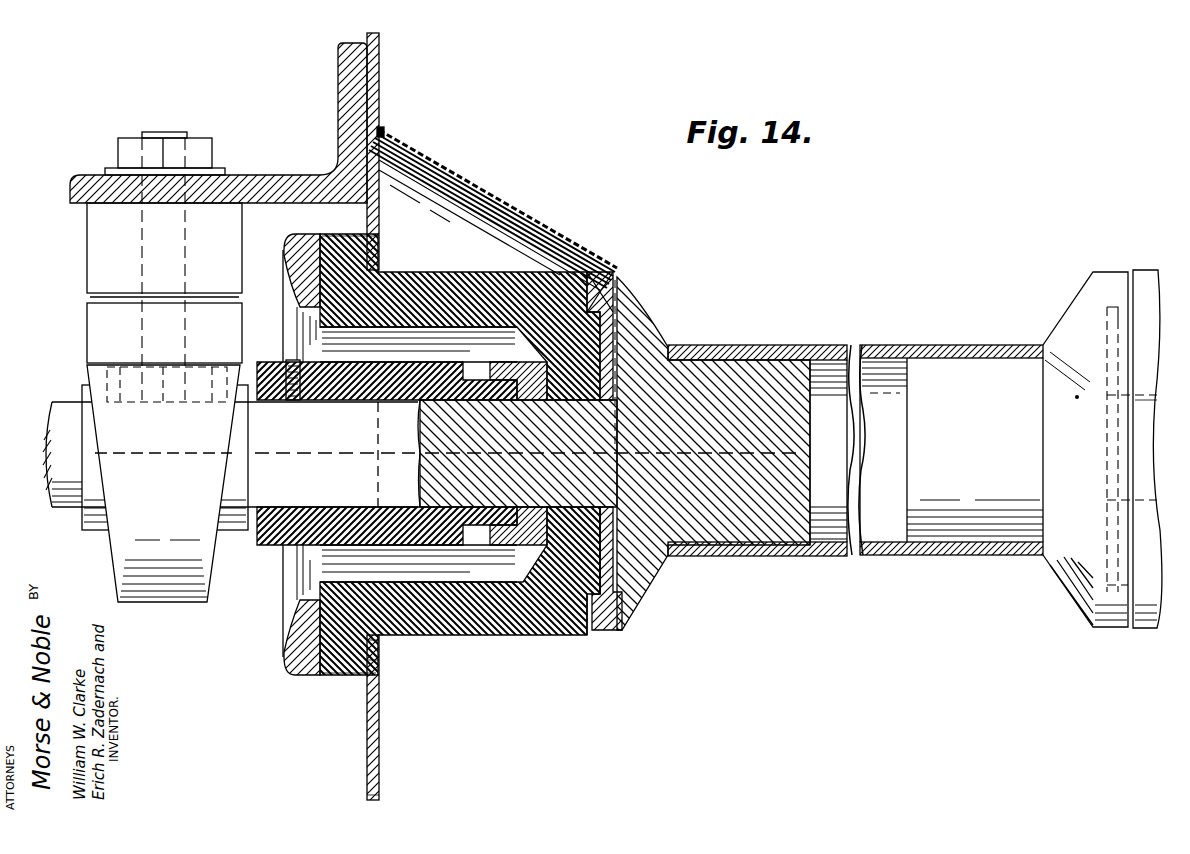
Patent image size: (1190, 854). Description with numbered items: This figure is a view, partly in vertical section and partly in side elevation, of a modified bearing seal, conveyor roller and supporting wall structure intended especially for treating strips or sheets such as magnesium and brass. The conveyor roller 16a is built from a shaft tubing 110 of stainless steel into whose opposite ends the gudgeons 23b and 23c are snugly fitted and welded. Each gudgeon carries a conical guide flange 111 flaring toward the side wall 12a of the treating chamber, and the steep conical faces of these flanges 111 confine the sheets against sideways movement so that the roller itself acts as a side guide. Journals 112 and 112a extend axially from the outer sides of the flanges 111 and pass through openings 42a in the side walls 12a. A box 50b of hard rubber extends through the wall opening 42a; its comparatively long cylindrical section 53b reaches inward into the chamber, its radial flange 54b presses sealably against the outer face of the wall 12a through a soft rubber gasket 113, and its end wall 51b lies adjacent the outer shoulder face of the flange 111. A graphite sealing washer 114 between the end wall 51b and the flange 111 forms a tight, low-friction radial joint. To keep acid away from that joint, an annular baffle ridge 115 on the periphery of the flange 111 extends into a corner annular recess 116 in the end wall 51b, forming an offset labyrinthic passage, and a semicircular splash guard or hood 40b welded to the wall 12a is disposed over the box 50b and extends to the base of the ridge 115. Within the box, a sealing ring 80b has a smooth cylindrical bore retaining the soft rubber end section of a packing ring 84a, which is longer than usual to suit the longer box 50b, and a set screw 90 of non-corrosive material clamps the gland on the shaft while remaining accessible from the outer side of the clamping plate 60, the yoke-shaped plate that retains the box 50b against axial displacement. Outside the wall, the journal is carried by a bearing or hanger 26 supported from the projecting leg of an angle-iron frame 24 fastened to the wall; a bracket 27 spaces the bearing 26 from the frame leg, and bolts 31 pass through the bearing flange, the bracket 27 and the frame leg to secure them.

The side wall 12a is at (380, 92).
The conveyor roller 16a is at (900, 341).
The gudgeon 23b is at (640, 319).
The gudgeon 23c is at (1108, 271).
The longitudinal frame 24 is at (274, 175).
The bearing 26 is at (167, 596).
The bracket 27 is at (95, 242).
The bolt 31 is at (160, 132).
The splash guard 40b is at (521, 213).
The opening 42a is at (385, 654).
The box 50b is at (540, 641).
The end wall 51b is at (595, 312).
The cylindrical section 53b is at (485, 637).
The flange 54b is at (335, 677).
The clamping plate 60 is at (285, 661).
The sealing ring 80b is at (511, 546).
The packing ring 84a is at (272, 548).
The set screw 90 is at (296, 360).
The shaft tubing 110 is at (812, 347).
The guide flange 111 is at (670, 335).
The journal 112 is at (62, 512).
The journal 112a is at (1158, 409).
The gasket 113 is at (365, 680).
The sealing washer 114 is at (612, 574).
The baffle ridge 115 is at (600, 610).
The annular recess 116 is at (577, 638).